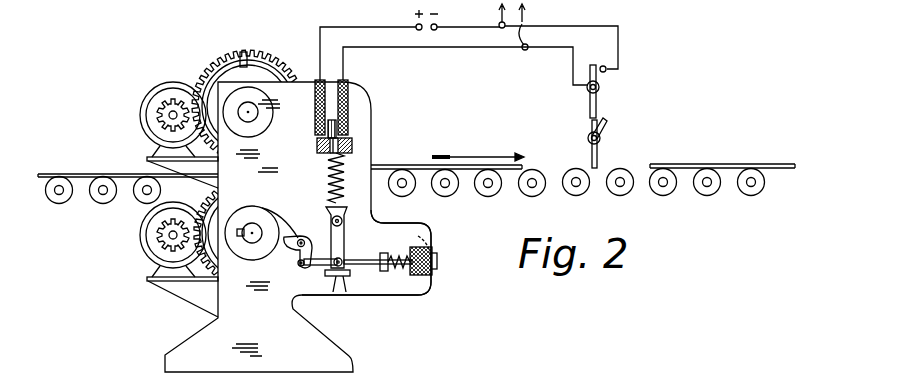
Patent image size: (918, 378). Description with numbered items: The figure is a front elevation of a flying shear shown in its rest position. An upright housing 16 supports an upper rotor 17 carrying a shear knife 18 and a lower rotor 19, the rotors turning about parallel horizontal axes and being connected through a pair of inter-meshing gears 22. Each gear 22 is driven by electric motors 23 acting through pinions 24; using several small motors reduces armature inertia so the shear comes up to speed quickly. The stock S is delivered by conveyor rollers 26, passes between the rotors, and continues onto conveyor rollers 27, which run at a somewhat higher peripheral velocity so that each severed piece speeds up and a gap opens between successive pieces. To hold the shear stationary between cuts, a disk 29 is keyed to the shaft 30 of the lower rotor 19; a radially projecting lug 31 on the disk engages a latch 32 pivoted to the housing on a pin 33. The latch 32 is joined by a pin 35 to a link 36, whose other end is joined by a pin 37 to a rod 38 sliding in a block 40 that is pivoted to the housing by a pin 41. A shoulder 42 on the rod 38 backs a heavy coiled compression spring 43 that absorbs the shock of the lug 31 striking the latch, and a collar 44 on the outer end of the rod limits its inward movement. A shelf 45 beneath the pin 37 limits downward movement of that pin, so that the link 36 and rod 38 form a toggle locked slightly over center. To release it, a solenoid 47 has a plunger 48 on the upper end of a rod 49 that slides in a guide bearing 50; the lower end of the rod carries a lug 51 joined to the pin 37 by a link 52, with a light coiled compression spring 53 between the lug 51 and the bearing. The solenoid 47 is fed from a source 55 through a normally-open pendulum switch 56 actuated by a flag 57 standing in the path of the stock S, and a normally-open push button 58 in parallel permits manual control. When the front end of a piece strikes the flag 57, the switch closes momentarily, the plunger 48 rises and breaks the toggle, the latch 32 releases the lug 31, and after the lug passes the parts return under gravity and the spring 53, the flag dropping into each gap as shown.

The upright housing 16 is at (210, 334).
The upper rotor 17 is at (223, 76).
The shear knife 18 is at (250, 58).
The lower rotor 19 is at (222, 251).
The inter-meshing gear 22 is at (284, 63).
The electric motor 23 is at (143, 106).
The pinion 24 is at (160, 118).
The conveyor roller 26 is at (82, 217).
The conveyor roller 27 is at (704, 195).
The disk 29 is at (248, 216).
The shaft 30 is at (253, 230).
The lug 31 is at (296, 236).
The latch 32 is at (297, 249).
The pin 33 is at (303, 240).
The pin 35 is at (303, 270).
The link 36 is at (322, 272).
The pin 37 is at (330, 259).
The rod 38 is at (376, 265).
The block 40 is at (432, 283).
The pin 41 is at (425, 243).
The shoulder 42 is at (386, 253).
The coiled compression spring 43 is at (398, 266).
The collar 44 is at (437, 258).
The shelf 45 is at (350, 293).
The solenoid 47 is at (350, 95).
The plunger 48 is at (349, 114).
The rod 49 is at (340, 128).
The guide bearing 50 is at (353, 149).
The lug 51 is at (338, 214).
The link 52 is at (343, 244).
The coiled compression spring 53 is at (333, 182).
The source of electricity 55 is at (410, 40).
The pendulum switch 56 is at (607, 91).
The flag 57 is at (598, 163).
The push button 58 is at (480, 42).
The stock S is at (90, 173).